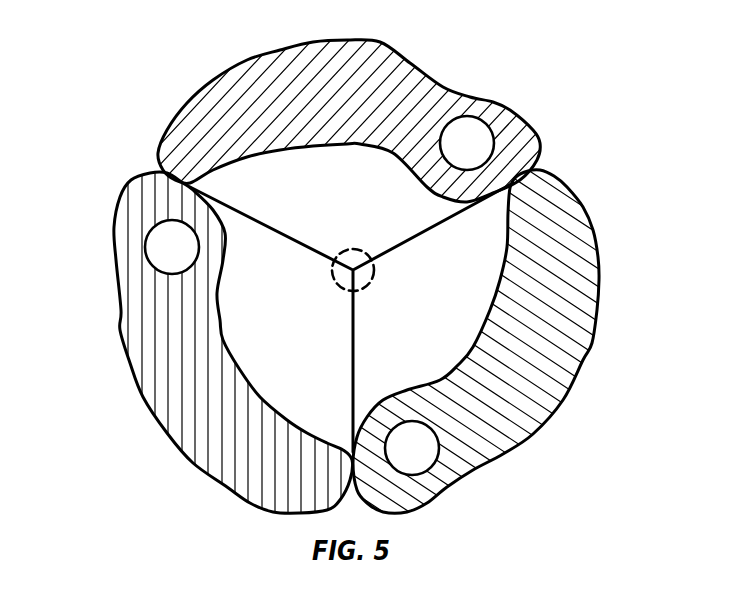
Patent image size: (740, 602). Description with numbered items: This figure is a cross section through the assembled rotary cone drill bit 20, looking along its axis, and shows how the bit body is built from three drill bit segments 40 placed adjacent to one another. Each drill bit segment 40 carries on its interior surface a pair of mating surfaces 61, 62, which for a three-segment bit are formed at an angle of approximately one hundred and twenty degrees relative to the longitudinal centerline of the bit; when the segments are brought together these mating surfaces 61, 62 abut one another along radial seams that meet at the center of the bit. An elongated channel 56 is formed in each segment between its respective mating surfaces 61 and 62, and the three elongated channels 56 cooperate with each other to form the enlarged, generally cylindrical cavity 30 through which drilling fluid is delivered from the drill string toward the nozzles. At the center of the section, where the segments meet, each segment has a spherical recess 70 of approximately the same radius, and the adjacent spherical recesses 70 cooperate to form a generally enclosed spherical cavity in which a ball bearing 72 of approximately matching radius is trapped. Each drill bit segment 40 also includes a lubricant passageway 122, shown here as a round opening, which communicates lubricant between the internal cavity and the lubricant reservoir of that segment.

The rotary cone drill bit 20 is at (137, 130).
The enlarged, generally cylindrical cavity 30 is at (329, 366).
The drill bit segment 40 is at (320, 43).
The elongated channel 56 is at (237, 163).
The mating surface 61 is at (292, 250).
The mating surface 62 is at (322, 250).
The spherical recess 70 is at (350, 246).
The ball bearing 72 is at (370, 287).
The lubricant passageway 122 is at (477, 136).